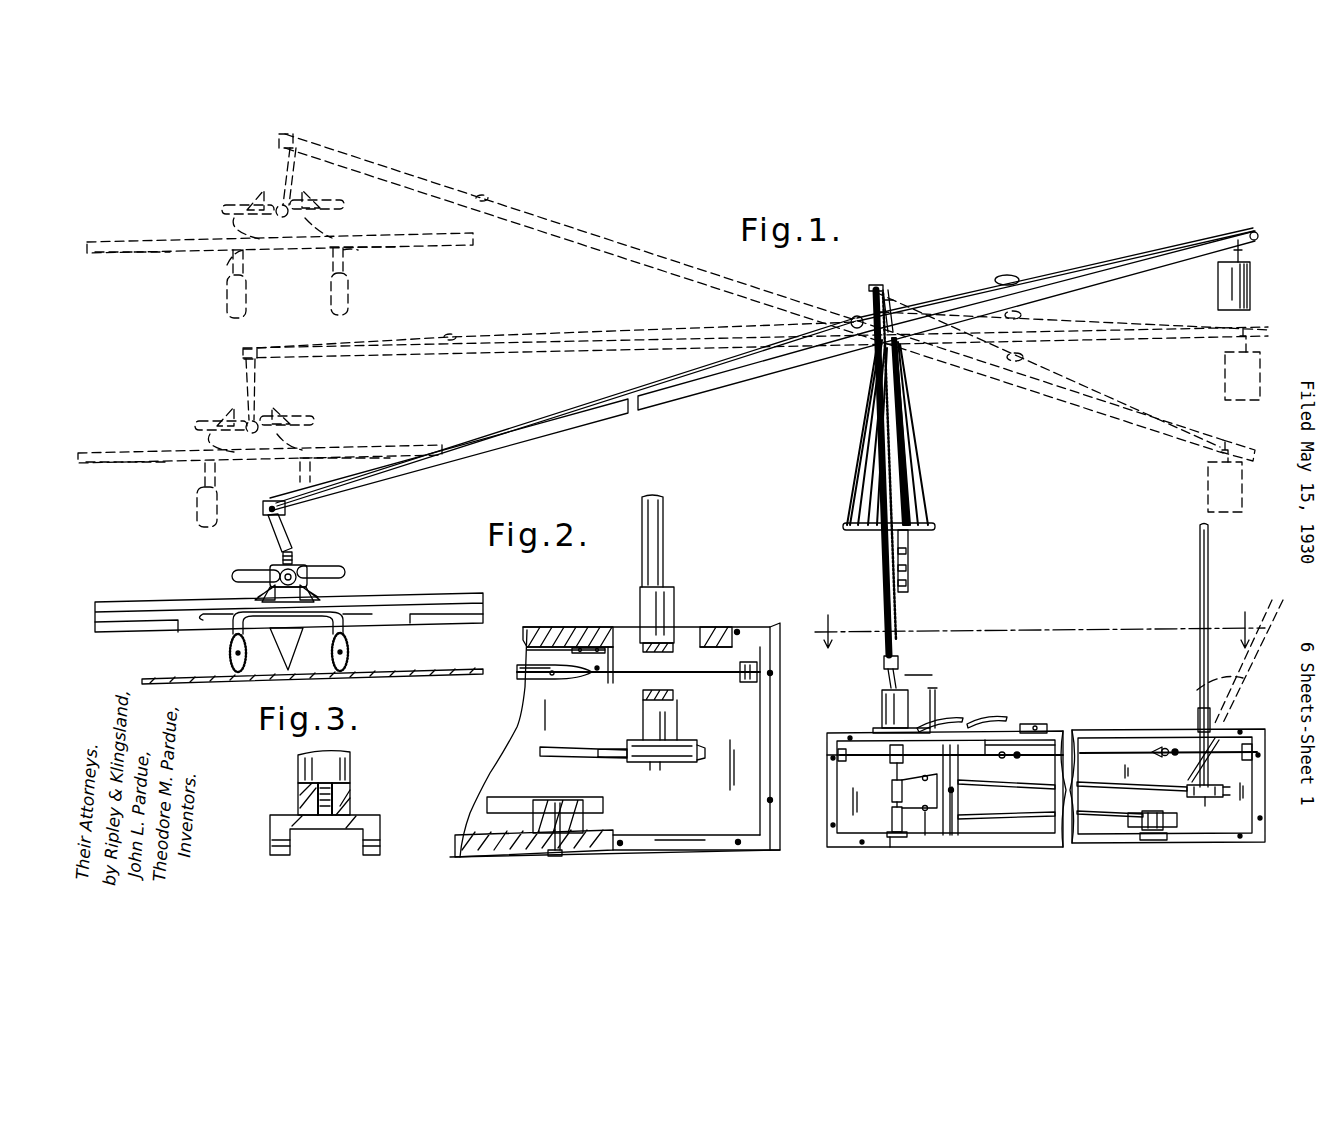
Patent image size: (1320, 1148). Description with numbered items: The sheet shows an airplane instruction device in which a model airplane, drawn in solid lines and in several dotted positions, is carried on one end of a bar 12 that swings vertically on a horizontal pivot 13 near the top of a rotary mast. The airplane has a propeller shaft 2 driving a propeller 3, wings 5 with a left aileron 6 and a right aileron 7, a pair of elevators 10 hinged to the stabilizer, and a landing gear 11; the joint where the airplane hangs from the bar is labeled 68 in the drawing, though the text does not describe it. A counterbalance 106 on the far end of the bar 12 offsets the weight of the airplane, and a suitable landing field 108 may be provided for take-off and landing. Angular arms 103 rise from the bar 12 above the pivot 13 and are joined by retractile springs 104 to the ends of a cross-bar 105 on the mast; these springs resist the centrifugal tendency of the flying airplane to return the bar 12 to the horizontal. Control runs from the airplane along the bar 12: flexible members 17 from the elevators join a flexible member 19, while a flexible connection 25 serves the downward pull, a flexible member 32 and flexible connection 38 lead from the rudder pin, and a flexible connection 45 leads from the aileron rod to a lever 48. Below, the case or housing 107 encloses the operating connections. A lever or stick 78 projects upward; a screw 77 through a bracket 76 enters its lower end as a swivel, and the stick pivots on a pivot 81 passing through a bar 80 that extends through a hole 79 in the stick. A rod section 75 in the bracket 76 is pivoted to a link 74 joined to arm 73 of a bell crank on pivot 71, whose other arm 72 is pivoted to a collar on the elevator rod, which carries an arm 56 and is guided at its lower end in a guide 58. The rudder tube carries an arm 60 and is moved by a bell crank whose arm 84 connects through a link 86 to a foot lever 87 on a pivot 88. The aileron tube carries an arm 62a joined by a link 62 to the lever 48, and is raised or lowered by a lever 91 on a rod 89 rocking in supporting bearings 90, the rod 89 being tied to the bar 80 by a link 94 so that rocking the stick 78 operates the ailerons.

In FIG. 1, the propeller shaft 2 is at (288, 595).
In FIG. 1, the propeller 3 is at (335, 570).
In FIG. 1, the wings 5 is at (432, 596).
In FIG. 1, the aileron 6 is at (445, 622).
In FIG. 1, the aileron 7 is at (147, 624).
In FIG. 1, the elevators 10 is at (1040, 621).
In FIG. 1, the landing gear 11 is at (230, 654).
In FIG. 1, the bar 12 is at (598, 428).
In FIG. 1, the horizontal pivot 13 is at (897, 305).
In FIG. 1, the flexible members 17 is at (896, 600).
In FIG. 2, the flexible members 17 is at (664, 530).
In FIG. 1, the flexible member 19 is at (868, 486).
In FIG. 1, the flexible connection 25 is at (912, 474).
In FIG. 1, the flexible member 32 is at (870, 508).
In FIG. 1, the flexible connection 38 is at (910, 500).
In FIG. 1, the flexible connection 45 is at (866, 450).
In FIG. 1, the lever 48 is at (868, 532).
In FIG. 1, the arm 56 is at (906, 556).
In FIG. 1, the guide 58 is at (890, 847).
In FIG. 1, the arm 60 is at (906, 570).
In FIG. 1, the link 62 is at (908, 545).
In FIG. 1, the arm 62a is at (906, 586).
In FIG. 1, the pivot pin 68 is at (293, 556).
In FIG. 1, the pivot 71 is at (960, 835).
In FIG. 1, the arm 72 is at (920, 835).
In FIG. 1, the arm 73 is at (960, 795).
In FIG. 1, the link 74 is at (1010, 785).
In FIG. 1, the rod section 75 is at (1207, 804).
In FIG. 2, the rod section 75 is at (660, 758).
In FIG. 1, the bracket 76 is at (1217, 787).
In FIG. 2, the bracket 76 is at (690, 744).
In FIG. 3, the bracket 76 is at (370, 815).
In FIG. 2, the screw 77 is at (568, 748).
In FIG. 3, the screw 77 is at (328, 815).
In FIG. 1, the lever or stick 78 is at (1198, 718).
In FIG. 2, the lever or stick 78 is at (674, 600).
In FIG. 3, the lever or stick 78 is at (297, 770).
In FIG. 2, the hole 79 is at (672, 660).
In FIG. 1, the bar 80 is at (1232, 745).
In FIG. 2, the bar 80 is at (735, 680).
In FIG. 1, the pivot 81 is at (1198, 757).
In FIG. 2, the pivot 81 is at (640, 676).
In FIG. 1, the arm 84 is at (918, 790).
In FIG. 1, the link 86 is at (1020, 818).
In FIG. 2, the link 86 is at (505, 797).
In FIG. 1, the lever 87 is at (1167, 827).
In FIG. 2, the lever 87 is at (584, 810).
In FIG. 1, the pivot 88 is at (1153, 811).
In FIG. 2, the pivot 88 is at (557, 800).
In FIG. 1, the rod 89 is at (862, 745).
In FIG. 2, the rod 89 is at (525, 682).
In FIG. 1, the supporting bearings 90 is at (815, 756).
In FIG. 1, the lever 91 is at (893, 762).
In FIG. 1, the link 94 is at (1115, 753).
In FIG. 1, the angular arms 103 is at (884, 296).
In FIG. 1, the springs 104 is at (874, 372).
In FIG. 1, the cross-bar 105 is at (900, 662).
In FIG. 1, the counterbalance 106 is at (1218, 292).
In FIG. 1, the case or housing 107 is at (1098, 744).
In FIG. 2, the case or housing 107 is at (752, 730).
In FIG. 1, the landing field 108 is at (418, 682).